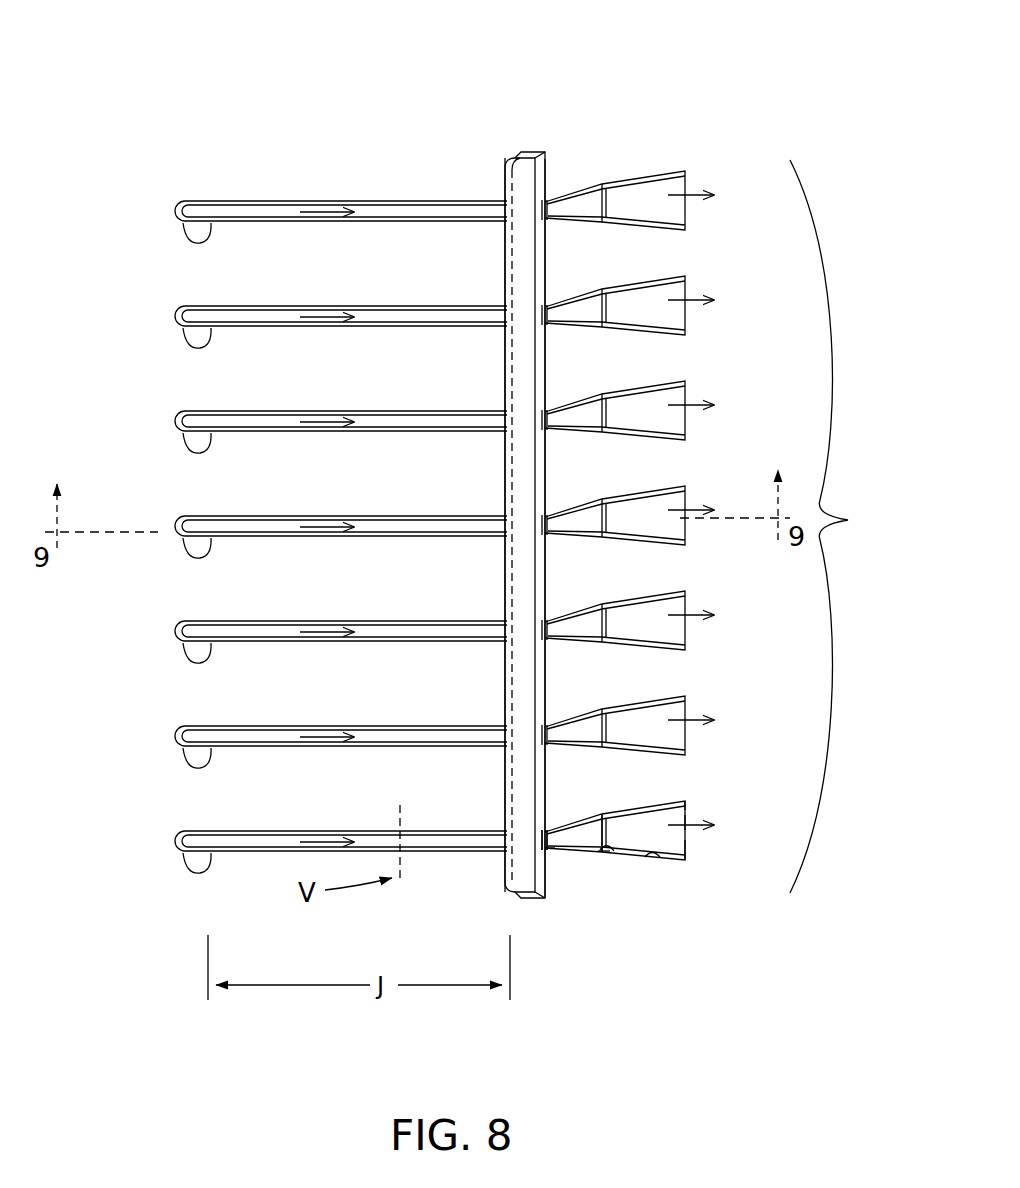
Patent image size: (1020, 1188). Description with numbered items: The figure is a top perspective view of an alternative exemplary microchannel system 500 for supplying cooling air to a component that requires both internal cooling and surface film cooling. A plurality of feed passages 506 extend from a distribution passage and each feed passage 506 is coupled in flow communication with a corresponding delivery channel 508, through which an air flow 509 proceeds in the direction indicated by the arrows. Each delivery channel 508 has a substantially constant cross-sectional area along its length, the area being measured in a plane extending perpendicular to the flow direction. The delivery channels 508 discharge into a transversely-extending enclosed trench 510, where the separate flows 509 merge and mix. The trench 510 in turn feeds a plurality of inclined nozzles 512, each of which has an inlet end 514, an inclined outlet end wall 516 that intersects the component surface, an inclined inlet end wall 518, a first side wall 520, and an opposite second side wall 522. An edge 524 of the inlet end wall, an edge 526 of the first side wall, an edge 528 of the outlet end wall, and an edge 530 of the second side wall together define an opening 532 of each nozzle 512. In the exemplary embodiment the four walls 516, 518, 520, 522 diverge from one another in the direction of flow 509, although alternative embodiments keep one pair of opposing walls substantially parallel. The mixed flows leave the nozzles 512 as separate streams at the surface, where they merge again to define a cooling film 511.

The microchannel system 500 is at (234, 112).
The feed passage 506 is at (183, 225).
The delivery channel 508 is at (276, 208).
The air flow 509 is at (333, 208).
The enclosed trench 510 is at (508, 165).
The film 511 is at (845, 526).
The inclined nozzle 512 is at (655, 171).
The inlet end 514 is at (550, 868).
The inclined outlet end wall 516 is at (668, 851).
The inclined inlet end wall 518 is at (584, 830).
The first side wall 520 is at (604, 868).
The second side wall 522 is at (545, 835).
The edge of inlet end wall 524 is at (608, 851).
The edge of first side wall 526 is at (655, 857).
The edge of outlet end wall 528 is at (690, 822).
The edge of second side wall 530 is at (680, 803).
The opening 532 is at (660, 835).